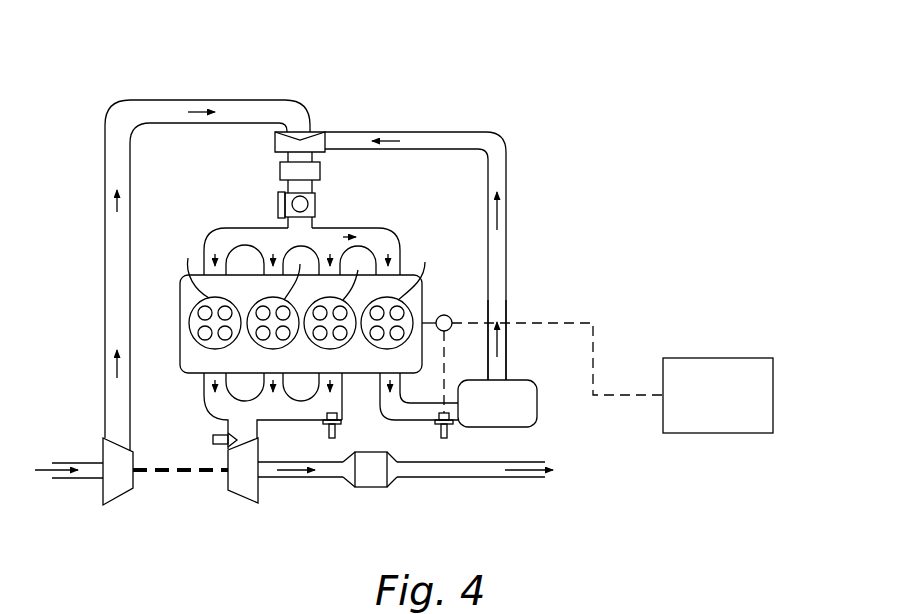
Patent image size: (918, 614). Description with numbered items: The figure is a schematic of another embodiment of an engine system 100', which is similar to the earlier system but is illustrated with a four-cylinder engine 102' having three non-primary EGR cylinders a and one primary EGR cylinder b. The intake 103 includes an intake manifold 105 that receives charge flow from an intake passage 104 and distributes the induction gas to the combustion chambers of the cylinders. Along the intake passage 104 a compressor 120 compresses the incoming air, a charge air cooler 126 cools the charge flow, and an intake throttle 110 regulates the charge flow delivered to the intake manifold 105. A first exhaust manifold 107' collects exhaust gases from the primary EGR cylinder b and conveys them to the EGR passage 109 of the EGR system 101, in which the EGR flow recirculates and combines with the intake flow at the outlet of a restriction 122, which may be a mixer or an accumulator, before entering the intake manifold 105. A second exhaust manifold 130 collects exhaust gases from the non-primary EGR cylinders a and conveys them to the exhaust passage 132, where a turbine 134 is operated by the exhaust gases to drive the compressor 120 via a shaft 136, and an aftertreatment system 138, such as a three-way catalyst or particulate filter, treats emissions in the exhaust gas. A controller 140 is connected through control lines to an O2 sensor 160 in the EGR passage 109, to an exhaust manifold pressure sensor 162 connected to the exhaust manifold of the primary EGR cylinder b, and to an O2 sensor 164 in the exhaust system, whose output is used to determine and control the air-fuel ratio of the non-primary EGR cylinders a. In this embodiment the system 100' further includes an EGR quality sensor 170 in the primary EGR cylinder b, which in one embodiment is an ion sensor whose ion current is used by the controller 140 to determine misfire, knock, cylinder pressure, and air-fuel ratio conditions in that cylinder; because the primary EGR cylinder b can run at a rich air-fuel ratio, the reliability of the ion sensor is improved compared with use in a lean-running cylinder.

The system 100' is at (716, 123).
The EGR system 101 is at (535, 152).
The engine 102' is at (284, 290).
The intake 103 is at (138, 66).
The intake passage 104 is at (104, 232).
The intake manifold 105 is at (350, 226).
The first exhaust manifold 107' is at (458, 387).
The EGR passage 109 is at (508, 222).
The intake throttle 110 is at (316, 204).
The compressor 120 is at (100, 491).
The restriction 122 is at (306, 131).
The charge air cooler 126 is at (279, 171).
The second exhaust manifold 130 is at (210, 411).
The exhaust passage 132 is at (450, 480).
The turbine 134 is at (260, 492).
The shaft 136 is at (170, 478).
The aftertreatment system 138 is at (390, 488).
The controller 140 is at (777, 388).
The O2 sensor 160 is at (449, 438).
The exhaust manifold pressure sensor 162 is at (343, 424).
The O2 sensor 164 is at (212, 440).
The EGR quality sensor 170 is at (446, 314).